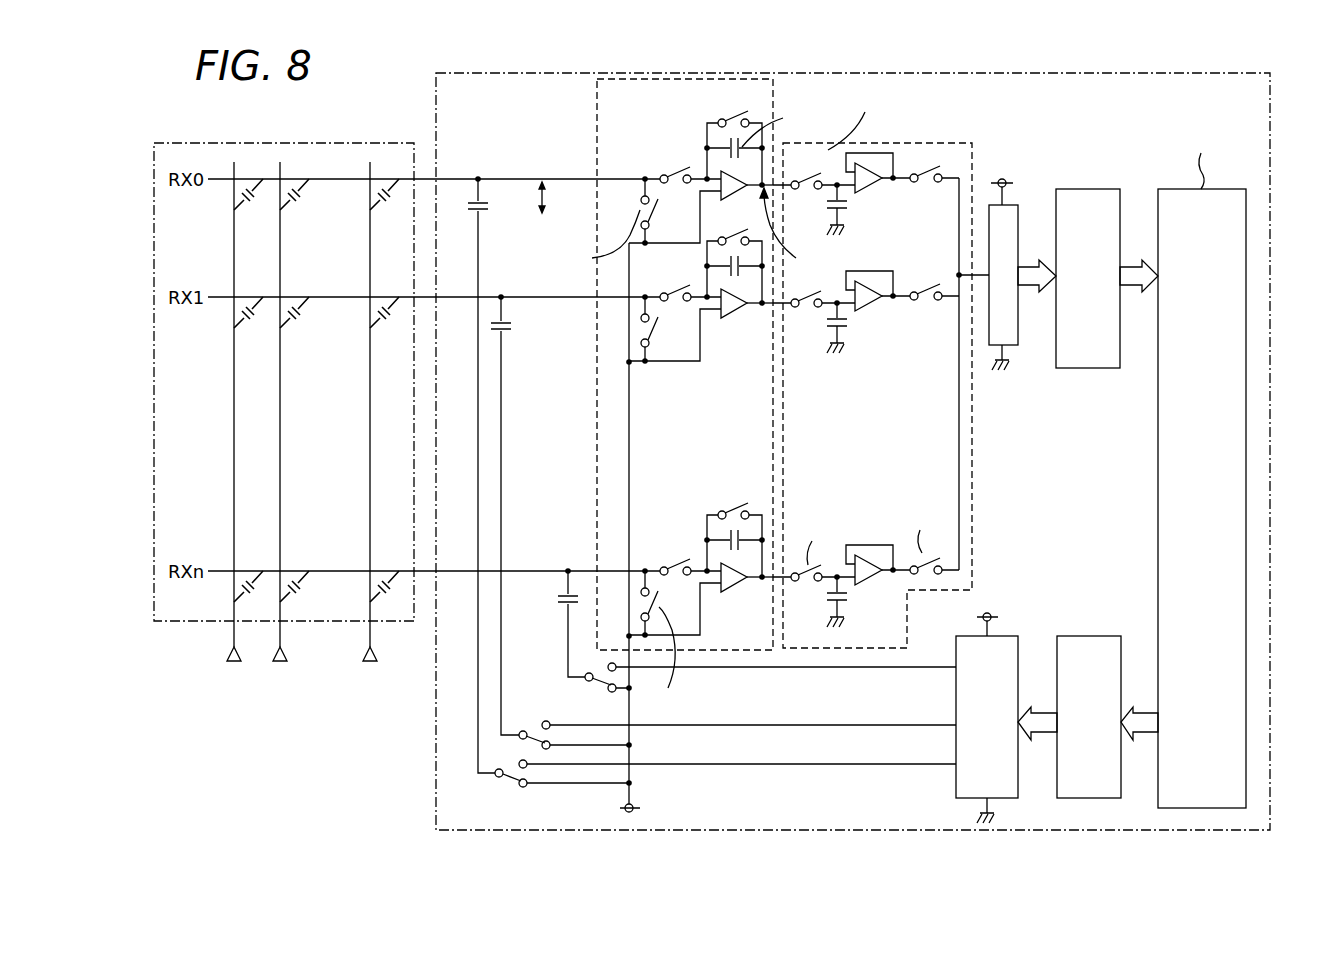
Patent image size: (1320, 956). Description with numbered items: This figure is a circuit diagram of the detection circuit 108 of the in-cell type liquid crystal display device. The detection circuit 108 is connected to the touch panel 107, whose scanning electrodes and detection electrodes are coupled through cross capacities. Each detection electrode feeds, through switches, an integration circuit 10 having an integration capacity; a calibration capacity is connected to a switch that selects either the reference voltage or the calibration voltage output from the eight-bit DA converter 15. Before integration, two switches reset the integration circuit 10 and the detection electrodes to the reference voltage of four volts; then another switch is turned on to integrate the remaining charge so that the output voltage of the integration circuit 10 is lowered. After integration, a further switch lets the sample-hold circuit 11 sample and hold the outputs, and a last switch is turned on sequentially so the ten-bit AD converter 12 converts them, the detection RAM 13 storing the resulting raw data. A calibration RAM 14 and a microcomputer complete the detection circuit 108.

The integration circuit 10 is at (618, 79).
The sample-hold circuit 11 is at (963, 143).
The 10-bit AD converter 12 is at (1012, 345).
The detection RAM 13 is at (1093, 189).
The calibration RAM 14 is at (1095, 636).
The 8-bit DA converter 15 is at (1005, 636).
The touch panel 107 is at (197, 623).
The detection circuit 108 is at (1183, 73).